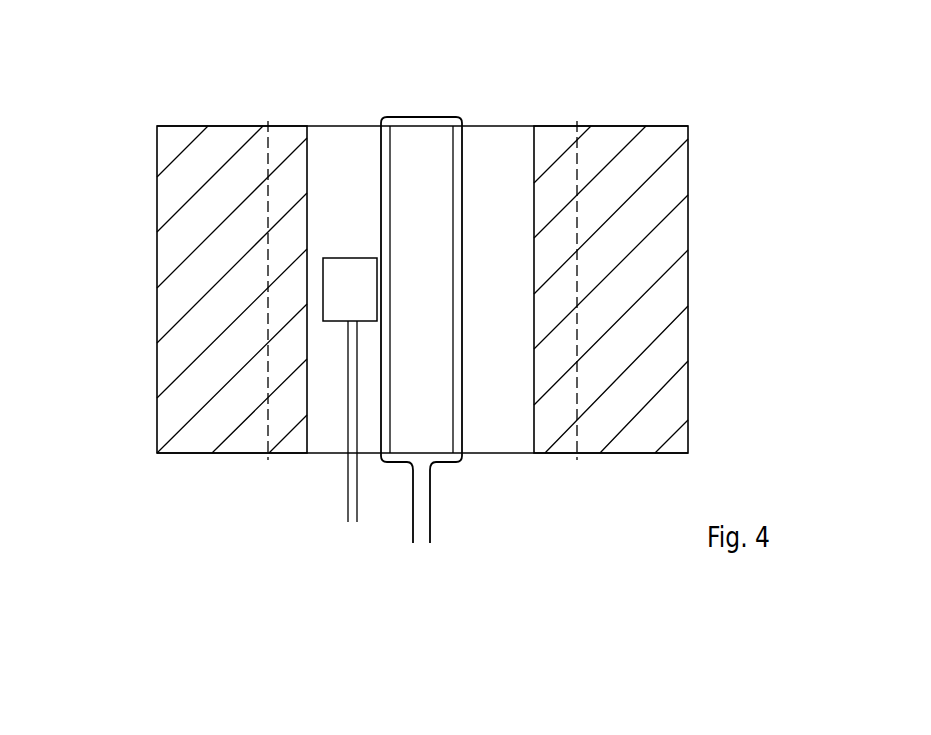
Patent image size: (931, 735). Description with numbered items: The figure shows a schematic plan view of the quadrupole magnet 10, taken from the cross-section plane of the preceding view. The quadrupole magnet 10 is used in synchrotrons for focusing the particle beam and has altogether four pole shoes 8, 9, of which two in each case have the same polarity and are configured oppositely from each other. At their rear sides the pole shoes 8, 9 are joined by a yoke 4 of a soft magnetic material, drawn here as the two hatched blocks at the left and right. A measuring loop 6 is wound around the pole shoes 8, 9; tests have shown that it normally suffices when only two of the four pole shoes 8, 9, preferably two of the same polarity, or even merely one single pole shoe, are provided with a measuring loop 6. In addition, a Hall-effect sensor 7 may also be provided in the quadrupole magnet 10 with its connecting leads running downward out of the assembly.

The yoke 4 is at (167, 324).
The measuring loop 6 is at (267, 122).
The Hall-effect sensor 7 is at (358, 302).
The pole shoe 8 is at (285, 140).
The pole shoe 9 is at (437, 150).
The quadrupole magnet 10 is at (734, 118).